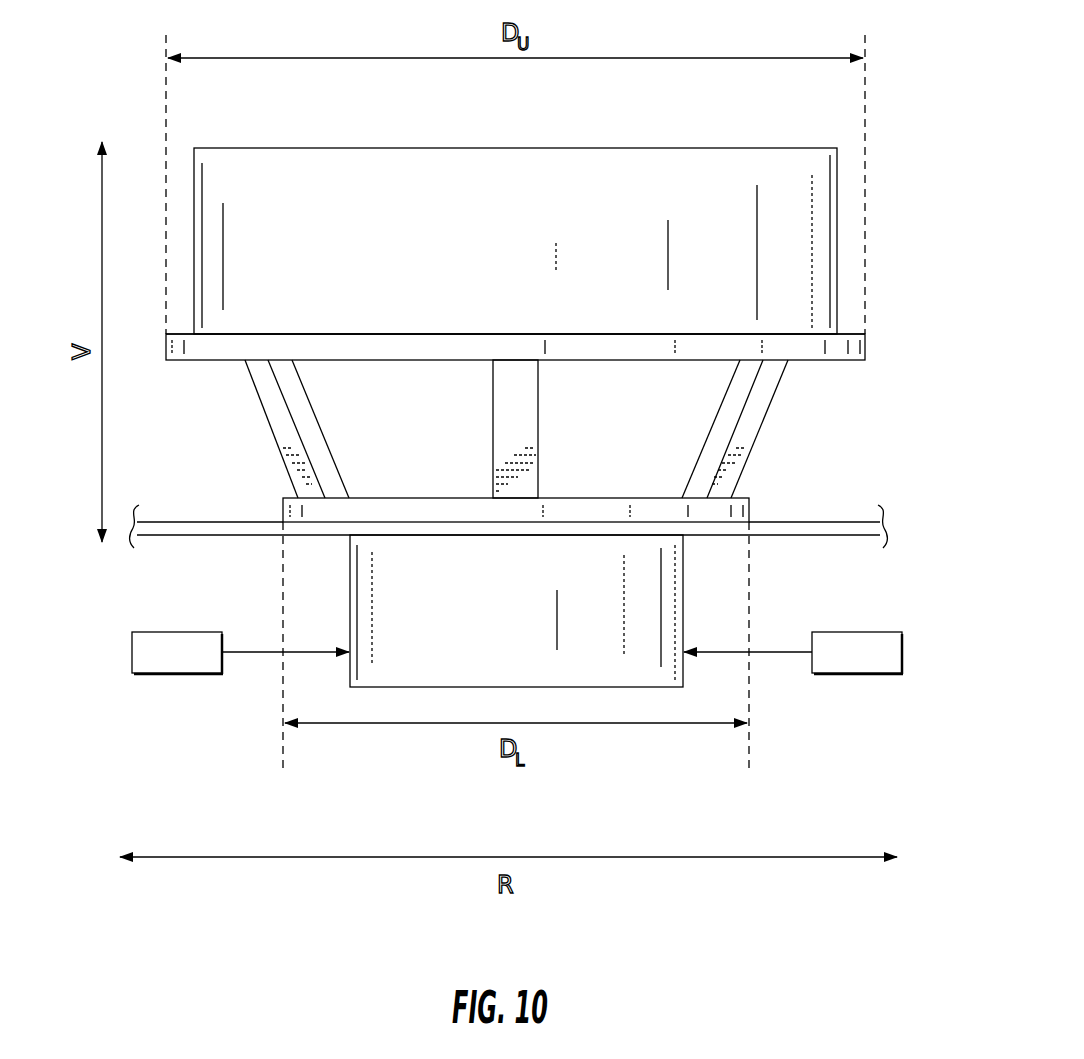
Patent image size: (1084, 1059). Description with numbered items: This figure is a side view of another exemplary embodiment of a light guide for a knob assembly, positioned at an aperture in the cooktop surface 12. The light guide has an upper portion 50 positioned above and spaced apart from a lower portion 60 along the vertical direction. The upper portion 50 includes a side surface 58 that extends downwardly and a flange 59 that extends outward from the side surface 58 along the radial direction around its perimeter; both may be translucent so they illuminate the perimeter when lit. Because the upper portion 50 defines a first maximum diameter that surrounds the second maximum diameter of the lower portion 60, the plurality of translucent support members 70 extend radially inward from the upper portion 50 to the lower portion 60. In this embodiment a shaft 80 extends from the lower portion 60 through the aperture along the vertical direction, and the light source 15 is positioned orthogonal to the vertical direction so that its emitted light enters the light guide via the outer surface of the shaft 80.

The cooktop surface 12 is at (250, 536).
The light source 15 is at (517, 653).
The upper portion 50 is at (868, 345).
The side surface 58 is at (515, 241).
The flange 59 is at (355, 347).
The lower portion 60 is at (415, 496).
The support members 70 is at (258, 412).
The shaft 80 is at (516, 611).